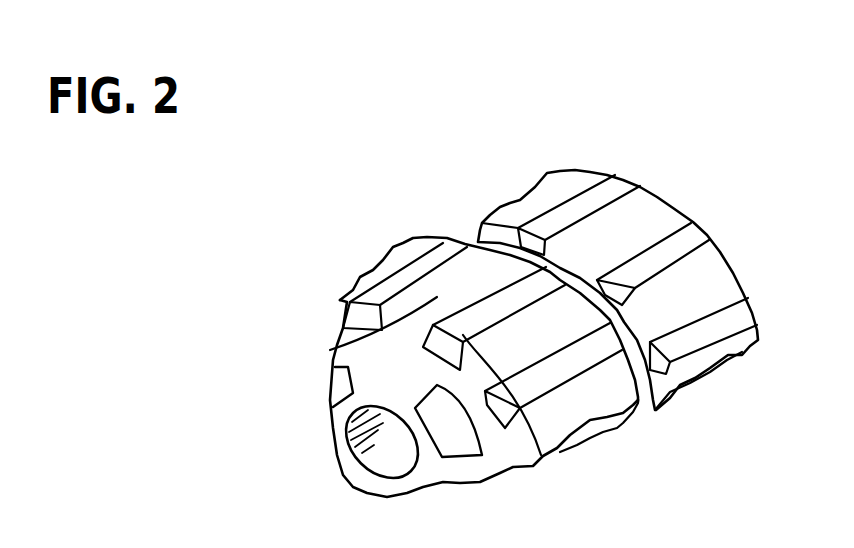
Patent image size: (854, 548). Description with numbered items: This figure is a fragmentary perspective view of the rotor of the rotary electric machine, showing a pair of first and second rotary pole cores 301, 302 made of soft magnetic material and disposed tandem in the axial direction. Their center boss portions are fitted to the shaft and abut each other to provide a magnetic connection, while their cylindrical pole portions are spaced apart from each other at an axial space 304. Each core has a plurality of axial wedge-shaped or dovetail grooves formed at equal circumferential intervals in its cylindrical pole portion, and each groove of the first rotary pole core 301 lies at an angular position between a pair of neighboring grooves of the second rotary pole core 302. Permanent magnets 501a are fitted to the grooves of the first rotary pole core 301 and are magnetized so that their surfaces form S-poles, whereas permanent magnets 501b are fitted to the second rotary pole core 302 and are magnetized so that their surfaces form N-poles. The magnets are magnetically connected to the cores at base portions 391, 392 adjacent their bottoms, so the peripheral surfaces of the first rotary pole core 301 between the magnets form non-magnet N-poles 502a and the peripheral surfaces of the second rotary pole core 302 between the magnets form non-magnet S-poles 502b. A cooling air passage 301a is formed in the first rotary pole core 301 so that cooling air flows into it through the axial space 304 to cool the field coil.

The first rotary pole core 301 is at (408, 253).
The cooling air passage 301a is at (460, 458).
The second rotary pole core 302 is at (505, 213).
The axial space 304 is at (477, 238).
The base portion 391 is at (490, 417).
The base portion 392 is at (518, 240).
The permanent magnets 501a is at (380, 283).
The permanent magnets 501b is at (612, 178).
The non-magnet N-poles 502a is at (330, 350).
The non-magnet S-poles 502b is at (660, 213).